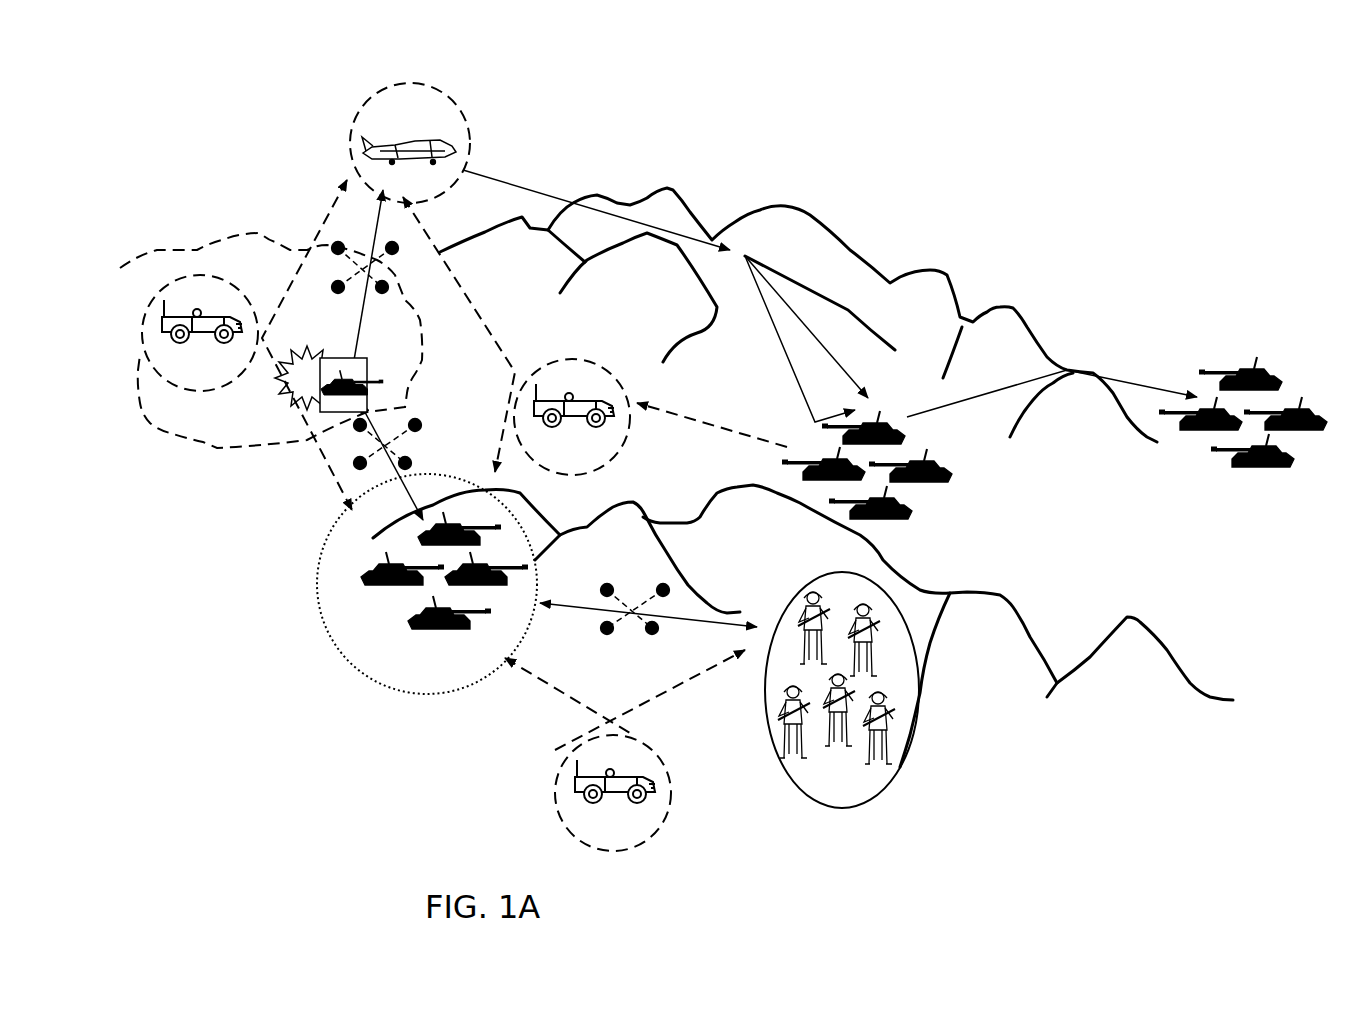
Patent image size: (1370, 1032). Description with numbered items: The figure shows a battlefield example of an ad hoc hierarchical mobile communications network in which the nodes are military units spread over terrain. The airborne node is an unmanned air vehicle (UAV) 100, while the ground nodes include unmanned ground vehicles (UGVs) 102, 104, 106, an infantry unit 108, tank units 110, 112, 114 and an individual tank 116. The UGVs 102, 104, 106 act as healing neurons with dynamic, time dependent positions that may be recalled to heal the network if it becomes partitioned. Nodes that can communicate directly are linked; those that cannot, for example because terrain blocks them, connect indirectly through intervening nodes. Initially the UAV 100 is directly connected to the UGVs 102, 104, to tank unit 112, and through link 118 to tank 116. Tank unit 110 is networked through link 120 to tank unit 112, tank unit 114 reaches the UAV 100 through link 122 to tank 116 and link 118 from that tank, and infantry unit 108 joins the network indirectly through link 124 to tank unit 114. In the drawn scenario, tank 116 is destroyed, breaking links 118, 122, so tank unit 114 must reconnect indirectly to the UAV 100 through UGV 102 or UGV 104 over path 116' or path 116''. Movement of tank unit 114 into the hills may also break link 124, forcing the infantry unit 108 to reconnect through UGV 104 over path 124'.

The unmanned air vehicle (UAV) 100 is at (372, 93).
The unmanned ground vehicle (UGV) 102 is at (575, 358).
The unmanned ground vehicle (UGV) 104 is at (205, 272).
The unmanned ground vehicle (UGV) 106 is at (556, 780).
The infantry unit 108 is at (910, 745).
The tank unit 110 is at (1227, 480).
The tank unit 112 is at (957, 513).
The tank unit 114 is at (320, 620).
The individual tank 116 is at (405, 384).
The path 116' is at (474, 334).
The path 116'' is at (274, 345).
The link 118 is at (353, 356).
The link 120 is at (1023, 383).
The link 122 is at (405, 478).
The link 124 is at (655, 596).
The path 124' is at (648, 732).